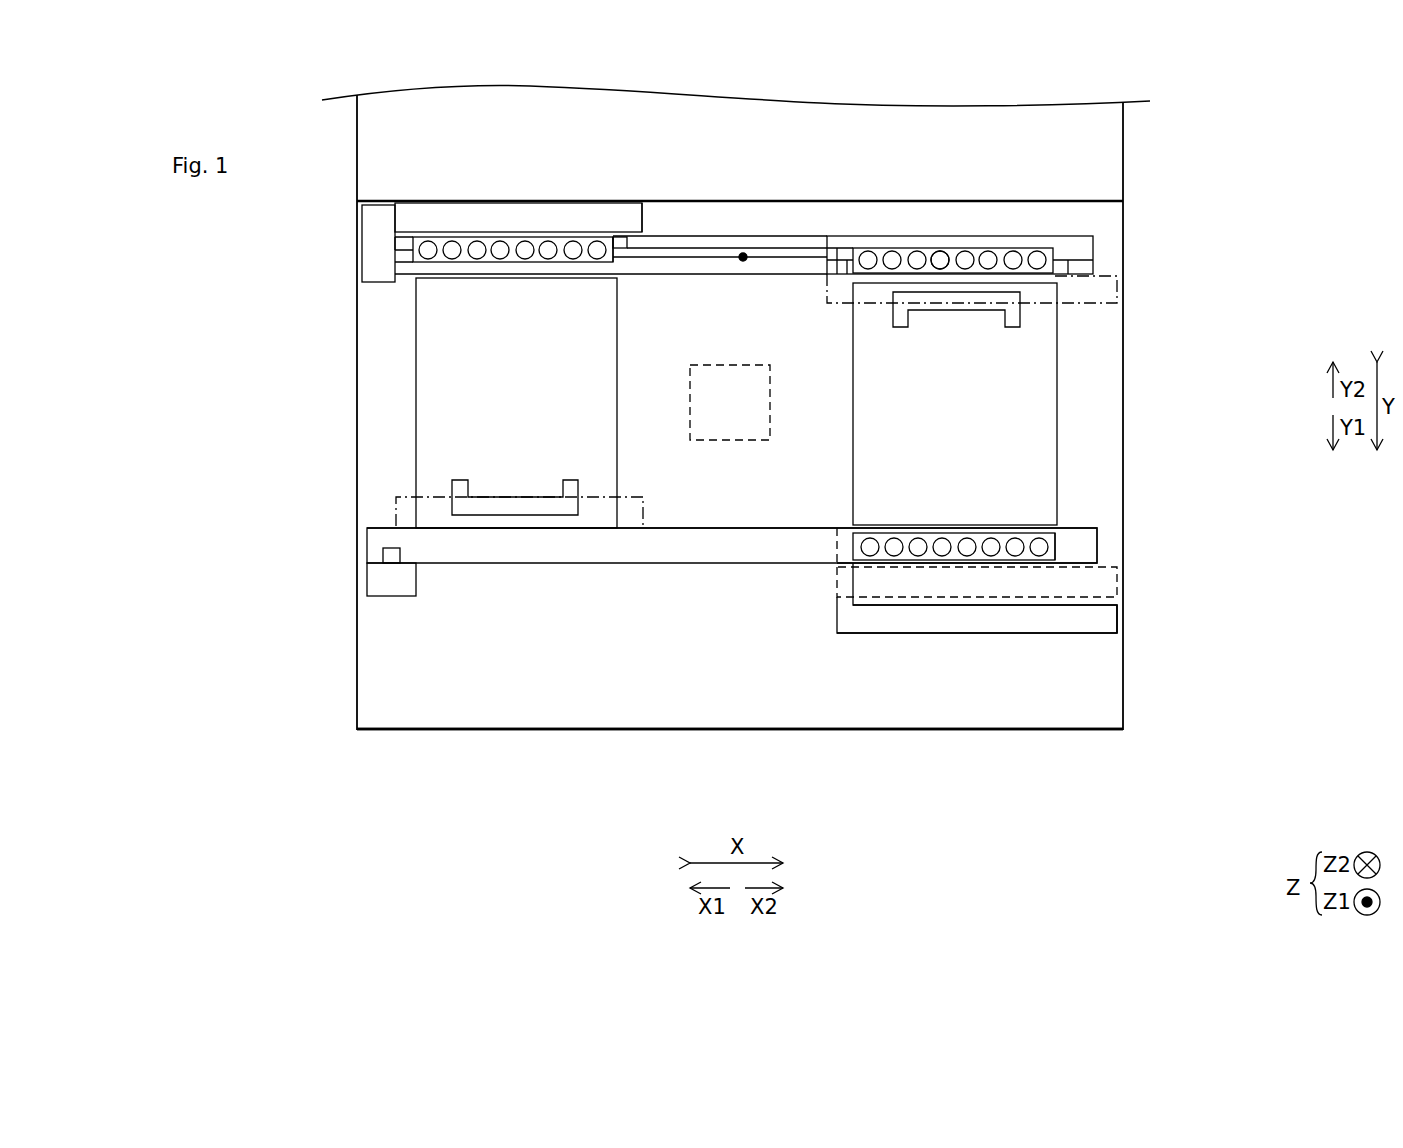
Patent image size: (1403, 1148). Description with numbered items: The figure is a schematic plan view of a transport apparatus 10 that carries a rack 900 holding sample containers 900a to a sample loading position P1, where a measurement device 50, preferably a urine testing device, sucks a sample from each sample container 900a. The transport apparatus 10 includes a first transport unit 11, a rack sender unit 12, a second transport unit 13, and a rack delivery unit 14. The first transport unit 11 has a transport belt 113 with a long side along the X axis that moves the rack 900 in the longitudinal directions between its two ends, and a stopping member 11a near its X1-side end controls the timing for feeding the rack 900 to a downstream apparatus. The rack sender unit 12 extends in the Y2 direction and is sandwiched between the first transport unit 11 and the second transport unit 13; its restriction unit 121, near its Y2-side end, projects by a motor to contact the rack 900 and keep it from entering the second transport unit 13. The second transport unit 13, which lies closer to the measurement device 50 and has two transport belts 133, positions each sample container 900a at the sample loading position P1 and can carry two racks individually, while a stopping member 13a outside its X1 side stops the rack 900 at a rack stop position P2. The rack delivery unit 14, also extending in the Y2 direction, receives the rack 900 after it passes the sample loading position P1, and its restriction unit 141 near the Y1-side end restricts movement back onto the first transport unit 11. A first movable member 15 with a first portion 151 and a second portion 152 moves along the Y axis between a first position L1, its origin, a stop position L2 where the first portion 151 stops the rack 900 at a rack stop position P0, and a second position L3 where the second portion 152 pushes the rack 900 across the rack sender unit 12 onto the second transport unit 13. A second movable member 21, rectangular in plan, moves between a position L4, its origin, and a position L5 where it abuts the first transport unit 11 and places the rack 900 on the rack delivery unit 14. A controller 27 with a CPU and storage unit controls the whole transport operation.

The transport apparatus 10 is at (737, 733).
The first transport unit 11 is at (682, 570).
The stopping member 11a is at (380, 578).
The transport belt 113 is at (730, 547).
The rack sender unit 12 is at (957, 440).
The restriction unit 121 is at (1010, 317).
The second transport unit 13 is at (1099, 257).
The stopping member 13a is at (367, 247).
The transport belts 133 is at (780, 243).
The rack delivery unit 14 is at (513, 383).
The restriction unit 141 is at (462, 488).
The first movable member 15 is at (955, 623).
The first portion 151 is at (847, 580).
The second portion 152 is at (1035, 618).
The second movable member 21 is at (505, 221).
The controller 27 is at (730, 408).
The measurement device 50 is at (1102, 170).
The rack 900 is at (587, 238).
The sample containers 900a is at (940, 252).
The first position L1 is at (1124, 622).
The stop position L2 is at (1124, 583).
The second position L3 is at (1124, 287).
The position L4 is at (649, 218).
The position L5 is at (649, 510).
The rack stop position P0 is at (1061, 546).
The sample loading position P1 is at (742, 265).
The rack stop position P2 is at (616, 255).